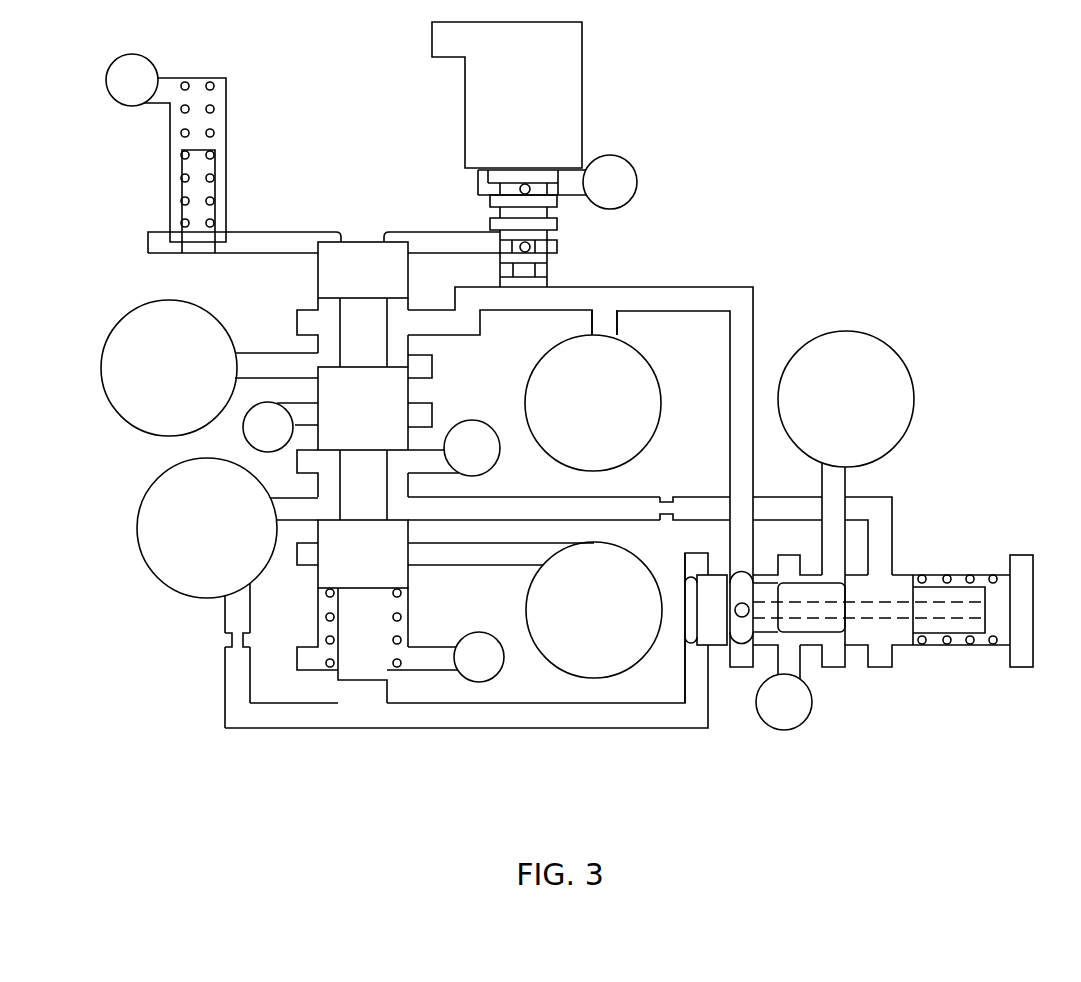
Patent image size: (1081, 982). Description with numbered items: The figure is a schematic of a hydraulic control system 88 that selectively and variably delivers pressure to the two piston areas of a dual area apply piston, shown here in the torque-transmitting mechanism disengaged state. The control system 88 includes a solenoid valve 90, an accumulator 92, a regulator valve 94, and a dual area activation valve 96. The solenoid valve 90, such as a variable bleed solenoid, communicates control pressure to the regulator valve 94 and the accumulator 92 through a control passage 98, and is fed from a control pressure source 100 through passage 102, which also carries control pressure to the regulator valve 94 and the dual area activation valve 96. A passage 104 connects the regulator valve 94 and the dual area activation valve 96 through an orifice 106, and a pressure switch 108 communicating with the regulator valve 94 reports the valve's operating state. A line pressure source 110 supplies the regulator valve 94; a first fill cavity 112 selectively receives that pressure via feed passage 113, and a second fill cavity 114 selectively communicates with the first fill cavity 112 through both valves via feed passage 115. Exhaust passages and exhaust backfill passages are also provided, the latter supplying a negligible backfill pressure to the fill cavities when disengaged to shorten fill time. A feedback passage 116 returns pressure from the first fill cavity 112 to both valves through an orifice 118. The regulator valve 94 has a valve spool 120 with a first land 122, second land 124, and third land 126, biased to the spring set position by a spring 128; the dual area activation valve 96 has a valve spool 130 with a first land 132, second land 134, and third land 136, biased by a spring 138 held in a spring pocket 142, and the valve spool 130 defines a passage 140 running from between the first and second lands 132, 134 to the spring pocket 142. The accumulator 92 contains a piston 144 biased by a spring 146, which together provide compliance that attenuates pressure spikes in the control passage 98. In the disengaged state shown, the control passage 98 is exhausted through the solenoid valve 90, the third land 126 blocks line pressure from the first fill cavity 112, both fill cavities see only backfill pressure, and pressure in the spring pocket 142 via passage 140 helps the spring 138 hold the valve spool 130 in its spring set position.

The control system 88 is at (674, 80).
The solenoid valve 90 is at (536, 108).
The accumulator 92 is at (242, 154).
The regulator valve 94 is at (371, 233).
The dual area activation valve 96 is at (934, 536).
The control passage 98 is at (421, 240).
The control pressure source 100 is at (572, 416).
The passage 102 is at (607, 289).
The passage 104 is at (496, 503).
The orifice 106 is at (673, 497).
The pressure switch 108 is at (148, 381).
The line pressure source 110 is at (573, 623).
The first fill cavity 112 is at (186, 541).
The feed passage 113 is at (290, 498).
The second fill cavity 114 is at (825, 412).
The feed passage 115 is at (838, 490).
The feedback passage 116 is at (428, 727).
The orifice 118 is at (230, 650).
The valve spool 120 is at (294, 278).
The first land 122 is at (343, 283).
The second land 124 is at (343, 421).
The third land 126 is at (343, 568).
The spring 128 is at (400, 617).
The valve spool 130 is at (722, 660).
The first land 132 is at (705, 612).
The second land 134 is at (790, 583).
The third land 136 is at (906, 647).
The spring 138 is at (1012, 556).
The passage 140 is at (897, 603).
The spring pocket 142 is at (993, 645).
The piston 144 is at (222, 202).
The spring 146 is at (214, 108).